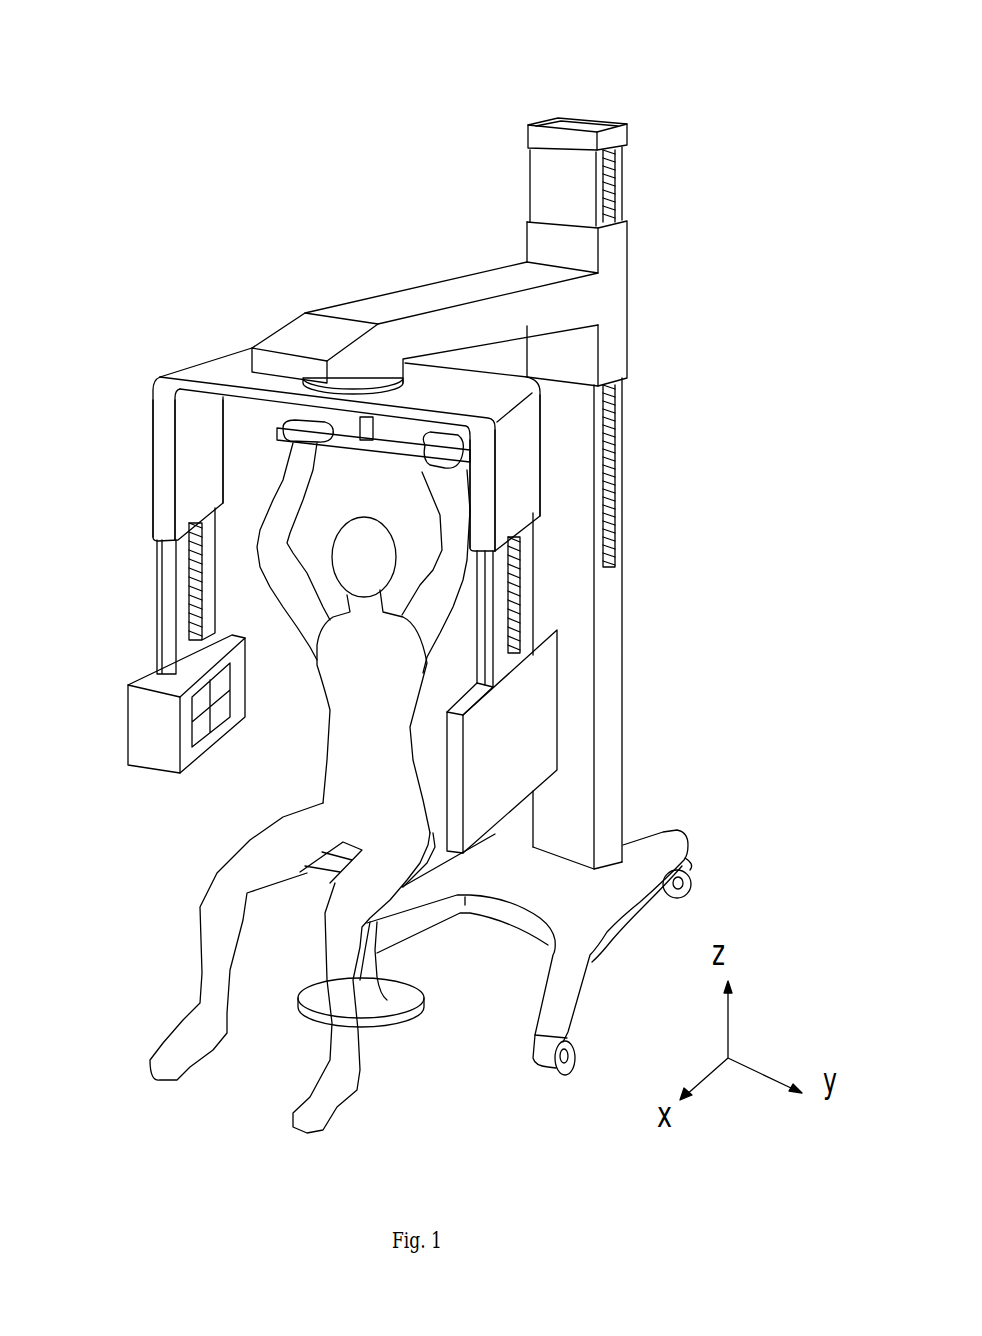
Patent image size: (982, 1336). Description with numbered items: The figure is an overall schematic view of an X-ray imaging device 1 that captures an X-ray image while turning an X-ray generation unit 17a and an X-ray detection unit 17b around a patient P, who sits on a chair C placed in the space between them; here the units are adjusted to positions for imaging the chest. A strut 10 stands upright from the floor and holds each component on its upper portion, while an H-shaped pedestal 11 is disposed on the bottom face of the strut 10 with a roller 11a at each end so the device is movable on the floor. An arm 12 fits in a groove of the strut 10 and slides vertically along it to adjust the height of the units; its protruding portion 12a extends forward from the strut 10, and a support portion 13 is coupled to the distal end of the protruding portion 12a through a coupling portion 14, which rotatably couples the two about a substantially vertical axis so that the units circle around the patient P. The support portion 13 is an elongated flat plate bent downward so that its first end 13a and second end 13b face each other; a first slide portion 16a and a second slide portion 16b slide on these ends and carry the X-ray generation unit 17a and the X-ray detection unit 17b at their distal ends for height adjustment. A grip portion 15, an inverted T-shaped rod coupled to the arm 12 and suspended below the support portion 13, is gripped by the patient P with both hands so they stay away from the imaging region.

The X-ray imaging device 1 is at (701, 120).
The strut 10 is at (610, 610).
The pedestal 11 is at (683, 862).
The roller 11a is at (693, 885).
The arm 12 is at (613, 335).
The protruding portion 12a is at (305, 333).
The support portion 13 is at (247, 357).
The first end 13a is at (187, 462).
The second end 13b is at (520, 480).
The coupling portion 14 is at (383, 372).
The grip portion 15 is at (280, 433).
The first slide portion 16a is at (183, 568).
The second slide portion 16b is at (522, 637).
The X-ray generation unit 17a is at (200, 733).
The X-ray detection unit 17b is at (527, 710).
The patient P is at (237, 878).
The chair C is at (400, 1005).